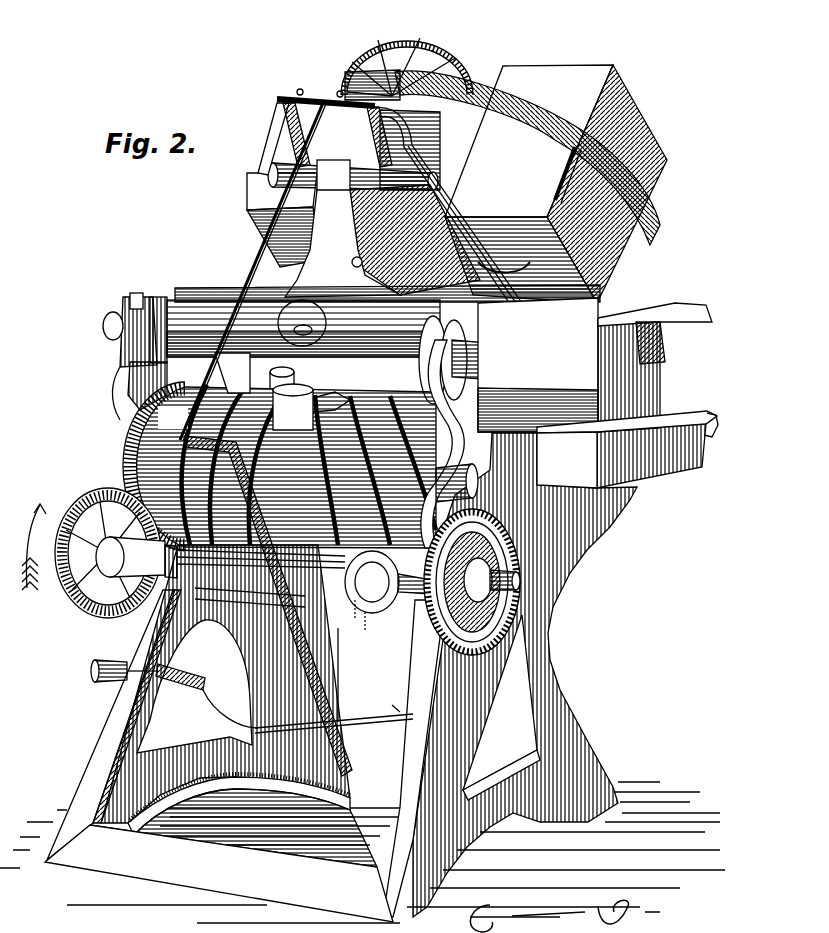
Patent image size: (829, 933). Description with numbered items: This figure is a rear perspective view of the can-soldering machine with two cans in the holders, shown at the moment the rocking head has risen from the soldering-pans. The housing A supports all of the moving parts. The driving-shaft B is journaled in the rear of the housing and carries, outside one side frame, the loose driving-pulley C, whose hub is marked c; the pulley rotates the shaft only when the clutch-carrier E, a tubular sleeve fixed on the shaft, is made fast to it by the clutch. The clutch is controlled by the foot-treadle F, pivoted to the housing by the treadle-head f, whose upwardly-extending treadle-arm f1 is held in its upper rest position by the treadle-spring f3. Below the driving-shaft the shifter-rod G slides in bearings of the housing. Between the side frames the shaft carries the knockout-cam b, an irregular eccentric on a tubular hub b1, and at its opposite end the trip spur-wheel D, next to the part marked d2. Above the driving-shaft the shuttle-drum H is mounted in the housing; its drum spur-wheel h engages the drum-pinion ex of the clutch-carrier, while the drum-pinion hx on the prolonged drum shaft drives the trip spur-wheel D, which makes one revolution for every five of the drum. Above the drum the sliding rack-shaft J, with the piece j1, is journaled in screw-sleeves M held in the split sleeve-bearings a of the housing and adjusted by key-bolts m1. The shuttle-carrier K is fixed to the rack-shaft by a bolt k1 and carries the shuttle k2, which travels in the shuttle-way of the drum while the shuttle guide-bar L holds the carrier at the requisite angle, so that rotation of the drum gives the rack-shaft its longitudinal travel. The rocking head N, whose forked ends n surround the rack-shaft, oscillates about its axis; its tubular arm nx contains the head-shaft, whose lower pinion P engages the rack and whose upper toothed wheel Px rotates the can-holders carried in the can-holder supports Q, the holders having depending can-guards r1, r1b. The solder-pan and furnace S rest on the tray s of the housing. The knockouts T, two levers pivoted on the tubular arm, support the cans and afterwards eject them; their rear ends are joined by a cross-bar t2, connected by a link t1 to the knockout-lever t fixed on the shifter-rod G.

The housing A is at (341, 642).
The driving-shaft B is at (261, 574).
The loose driving-pulley C is at (40, 547).
The trip spur-wheel D is at (472, 582).
The clutch-carrier E is at (108, 566).
The foot-treadle F is at (334, 704).
The shifter-rod G is at (222, 632).
The shuttle-drum H is at (279, 466).
The sliding rack-shaft J is at (383, 352).
The shuttle-carrier K is at (310, 397).
The shuttle guide-bar L is at (434, 444).
The screw-sleeves M is at (118, 345).
The rocking head N is at (303, 319).
The pinion P is at (469, 208).
The toothed wheel Px is at (418, 48).
The can-holder supports Q is at (342, 185).
The solder-pan and furnace S is at (595, 365).
The knockouts T is at (498, 266).
The split sleeve-bearings a is at (153, 290).
The knockout-cam b is at (388, 603).
The tubular hub b1 is at (369, 635).
The hub c is at (136, 557).
The shaft end d2 is at (518, 582).
The drum-pinion ex is at (158, 585).
The treadle-head f is at (207, 696).
The treadle-arm f1 is at (160, 702).
The treadle-spring f3 is at (338, 632).
The drum spur-wheel h is at (143, 414).
The drum-pinion hx is at (457, 467).
The plate j1 is at (232, 373).
The bolt k1 is at (312, 492).
The shuttle k2 is at (124, 448).
The key-bolts m1 is at (133, 295).
The ends of rocking head n is at (308, 350).
The tubular arm nx is at (382, 241).
The can-guards r1 is at (560, 182).
The can-guards r1b is at (266, 166).
The tray s is at (627, 449).
The knockout-lever t is at (268, 606).
The link t1 is at (262, 252).
The cross-bar t2 is at (302, 96).